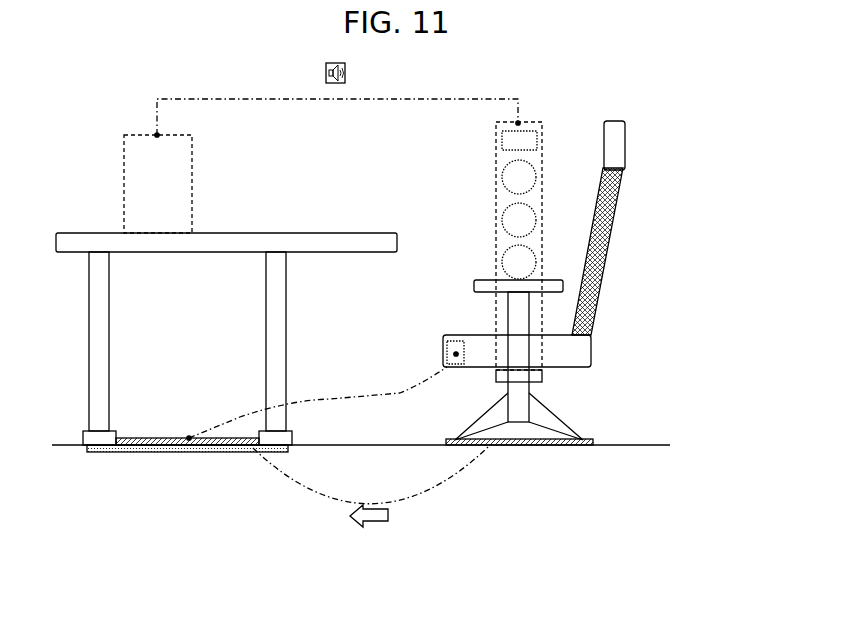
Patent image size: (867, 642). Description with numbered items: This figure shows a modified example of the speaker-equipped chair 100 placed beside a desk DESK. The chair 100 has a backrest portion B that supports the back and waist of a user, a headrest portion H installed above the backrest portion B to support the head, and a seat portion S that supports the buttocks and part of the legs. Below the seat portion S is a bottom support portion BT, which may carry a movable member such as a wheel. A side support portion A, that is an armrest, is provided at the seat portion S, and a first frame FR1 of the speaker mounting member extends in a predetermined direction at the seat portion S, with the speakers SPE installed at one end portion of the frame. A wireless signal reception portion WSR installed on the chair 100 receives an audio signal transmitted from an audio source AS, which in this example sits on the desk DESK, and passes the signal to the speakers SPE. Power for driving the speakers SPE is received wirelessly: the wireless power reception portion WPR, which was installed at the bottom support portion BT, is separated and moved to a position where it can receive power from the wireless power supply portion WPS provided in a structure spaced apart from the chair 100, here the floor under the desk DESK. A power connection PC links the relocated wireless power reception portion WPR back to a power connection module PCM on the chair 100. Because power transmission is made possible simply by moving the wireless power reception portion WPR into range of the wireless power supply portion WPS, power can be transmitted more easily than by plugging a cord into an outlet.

The chair 100 is at (541, 265).
The audio source AS is at (147, 142).
The desk DESK is at (77, 240).
The power cable PC is at (297, 393).
The wireless power reception portion WPR is at (140, 448).
The wireless power supply portion WPS is at (222, 455).
The wireless signal reception portion WSR is at (498, 145).
The speaker SPE is at (498, 195).
The side support portion A is at (515, 319).
The power connection module PCM is at (445, 353).
The seat portion S is at (583, 347).
The first frame FR1 is at (556, 375).
The bottom support portion BT is at (515, 410).
The backrest portion B is at (612, 197).
The headrest portion H is at (617, 142).